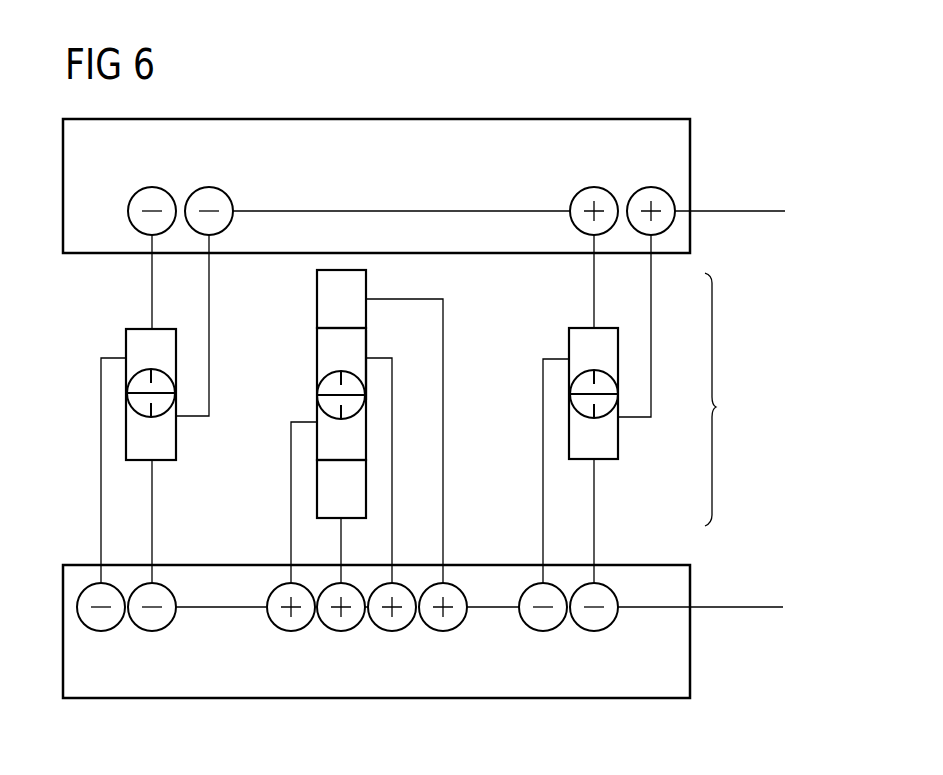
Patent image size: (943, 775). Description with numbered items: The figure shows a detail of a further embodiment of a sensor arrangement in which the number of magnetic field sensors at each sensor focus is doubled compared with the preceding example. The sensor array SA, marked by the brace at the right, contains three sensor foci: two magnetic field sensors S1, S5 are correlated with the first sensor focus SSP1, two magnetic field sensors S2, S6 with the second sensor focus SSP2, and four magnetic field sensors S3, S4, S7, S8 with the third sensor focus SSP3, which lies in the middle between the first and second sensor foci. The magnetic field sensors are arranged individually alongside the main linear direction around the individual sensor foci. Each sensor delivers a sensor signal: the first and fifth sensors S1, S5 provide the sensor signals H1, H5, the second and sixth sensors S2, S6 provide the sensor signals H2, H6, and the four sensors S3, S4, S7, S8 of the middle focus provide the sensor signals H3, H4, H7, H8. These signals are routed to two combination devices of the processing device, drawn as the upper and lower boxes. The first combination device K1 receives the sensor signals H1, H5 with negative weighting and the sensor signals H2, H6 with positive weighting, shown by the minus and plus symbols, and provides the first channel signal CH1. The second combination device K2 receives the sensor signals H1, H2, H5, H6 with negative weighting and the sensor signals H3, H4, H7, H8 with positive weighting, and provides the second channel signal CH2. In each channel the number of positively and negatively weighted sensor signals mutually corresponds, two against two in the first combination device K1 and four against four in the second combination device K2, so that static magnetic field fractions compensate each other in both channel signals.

The first combination device K1 is at (369, 119).
The second combination device K2 is at (690, 657).
The first channel signal CH1 is at (742, 210).
The second channel signal CH2 is at (745, 607).
The sensor signal H1 is at (122, 409).
The sensor signal H2 is at (563, 409).
The sensor signal H3 is at (286, 526).
The sensor signal H4 is at (400, 494).
The sensor signal H5 is at (174, 409).
The sensor signal H6 is at (616, 409).
The sensor signal H7 is at (337, 574).
The sensor signal H8 is at (426, 465).
The magnetic field sensor S1 is at (126, 347).
The magnetic field sensor S2 is at (569, 342).
The magnetic field sensor S3 is at (317, 415).
The magnetic field sensor S4 is at (367, 343).
The magnetic field sensor S5 is at (163, 462).
The magnetic field sensor S6 is at (605, 462).
The magnetic field sensor S7 is at (317, 490).
The magnetic field sensor S8 is at (317, 283).
The first sensor focus SSP1 is at (157, 420).
The second sensor focus SSP2 is at (600, 420).
The third sensor focus SSP3 is at (327, 378).
The sensor array SA is at (728, 399).